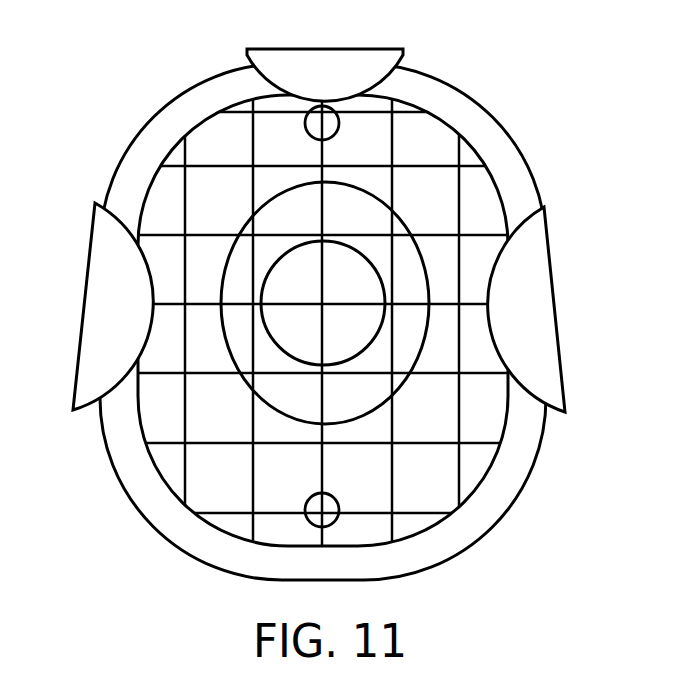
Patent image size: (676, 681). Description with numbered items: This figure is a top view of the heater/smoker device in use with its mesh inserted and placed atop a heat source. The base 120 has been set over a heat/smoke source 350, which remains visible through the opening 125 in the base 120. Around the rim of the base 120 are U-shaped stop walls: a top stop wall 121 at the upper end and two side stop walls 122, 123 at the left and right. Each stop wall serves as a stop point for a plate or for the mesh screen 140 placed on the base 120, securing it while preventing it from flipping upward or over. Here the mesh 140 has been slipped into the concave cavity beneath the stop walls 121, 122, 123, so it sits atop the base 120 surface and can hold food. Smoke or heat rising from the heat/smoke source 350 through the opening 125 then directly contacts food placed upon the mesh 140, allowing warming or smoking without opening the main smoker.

The base 120 is at (173, 100).
The mesh screen 140 is at (167, 153).
The top stop wall 121 is at (336, 47).
The side stop wall 122 is at (87, 280).
The side stop wall 123 is at (552, 274).
The opening 125 is at (247, 224).
The heat/smoke source 350 is at (323, 303).